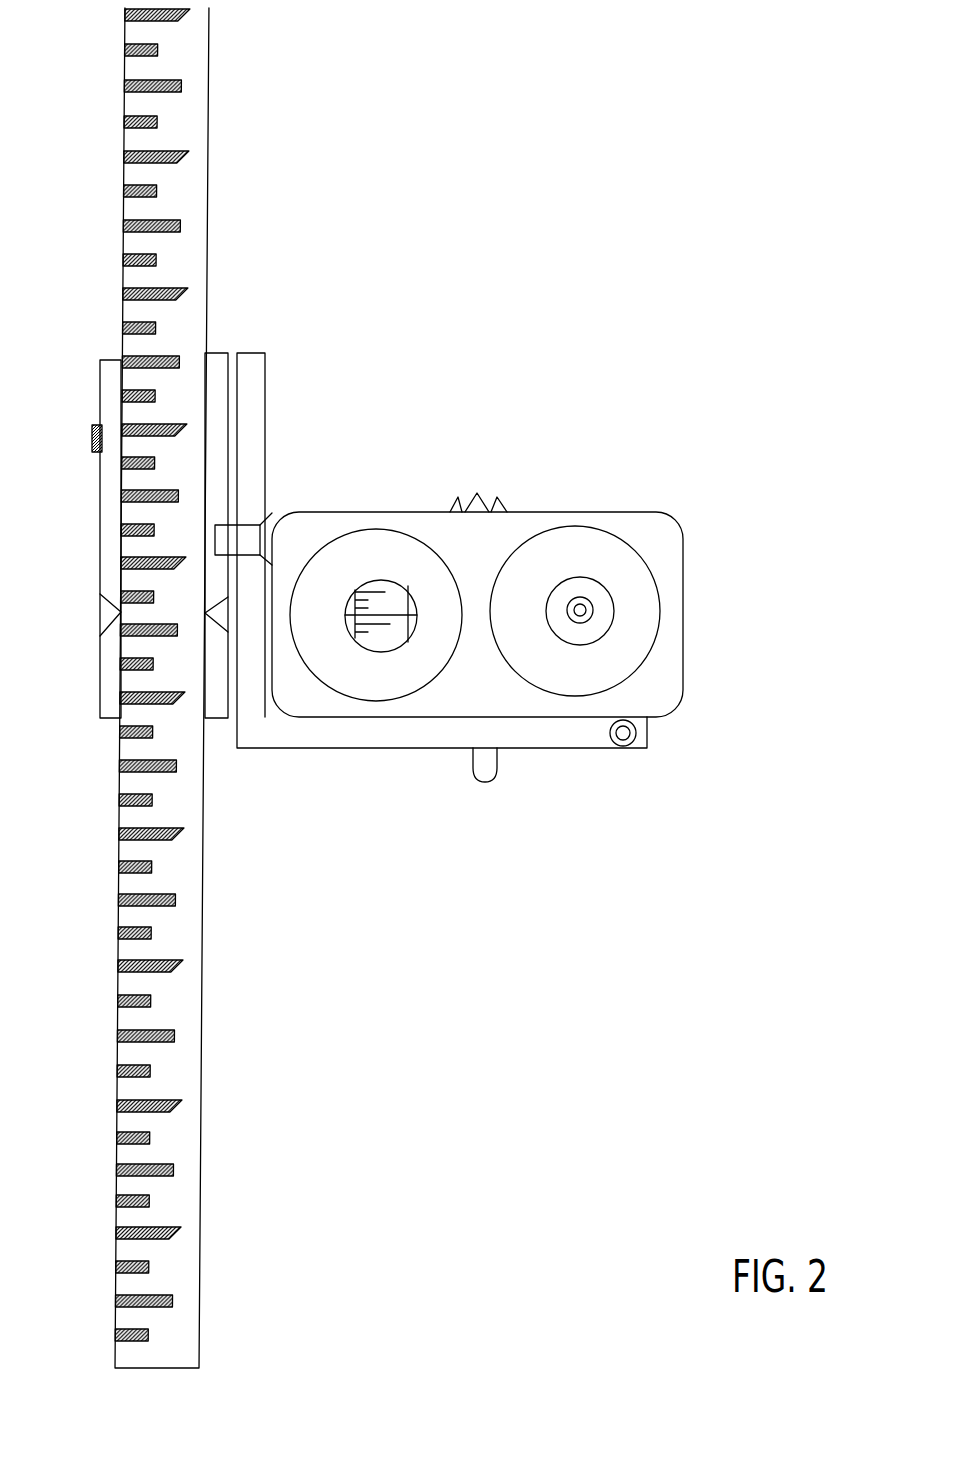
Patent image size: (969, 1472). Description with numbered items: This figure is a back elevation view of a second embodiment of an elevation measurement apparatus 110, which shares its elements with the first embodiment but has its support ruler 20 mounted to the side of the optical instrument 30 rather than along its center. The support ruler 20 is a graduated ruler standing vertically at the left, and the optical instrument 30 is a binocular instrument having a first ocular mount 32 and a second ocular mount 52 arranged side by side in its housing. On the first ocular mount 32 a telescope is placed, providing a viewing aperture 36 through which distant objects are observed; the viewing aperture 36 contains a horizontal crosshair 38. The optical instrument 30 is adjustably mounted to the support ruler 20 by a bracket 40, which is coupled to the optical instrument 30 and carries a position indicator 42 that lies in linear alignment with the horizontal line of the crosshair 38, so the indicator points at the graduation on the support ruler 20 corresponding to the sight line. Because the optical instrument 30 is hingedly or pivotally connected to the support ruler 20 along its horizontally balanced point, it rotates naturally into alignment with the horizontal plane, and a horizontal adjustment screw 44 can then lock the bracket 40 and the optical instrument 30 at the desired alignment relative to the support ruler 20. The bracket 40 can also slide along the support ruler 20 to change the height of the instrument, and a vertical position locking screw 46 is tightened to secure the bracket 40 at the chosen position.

The elevation measurement apparatus 110 is at (603, 238).
The support ruler 20 is at (118, 825).
The optical instrument 30 is at (577, 435).
The first ocular mount 32 is at (403, 512).
The viewing aperture 36 is at (368, 653).
The horizontal crosshair 38 is at (415, 623).
The bracket 40 is at (235, 337).
The position indicator 42 is at (98, 612).
The horizontal adjustment screw 44 is at (266, 515).
The vertical position locking screw 46 is at (100, 453).
The second ocular mount 52 is at (600, 512).